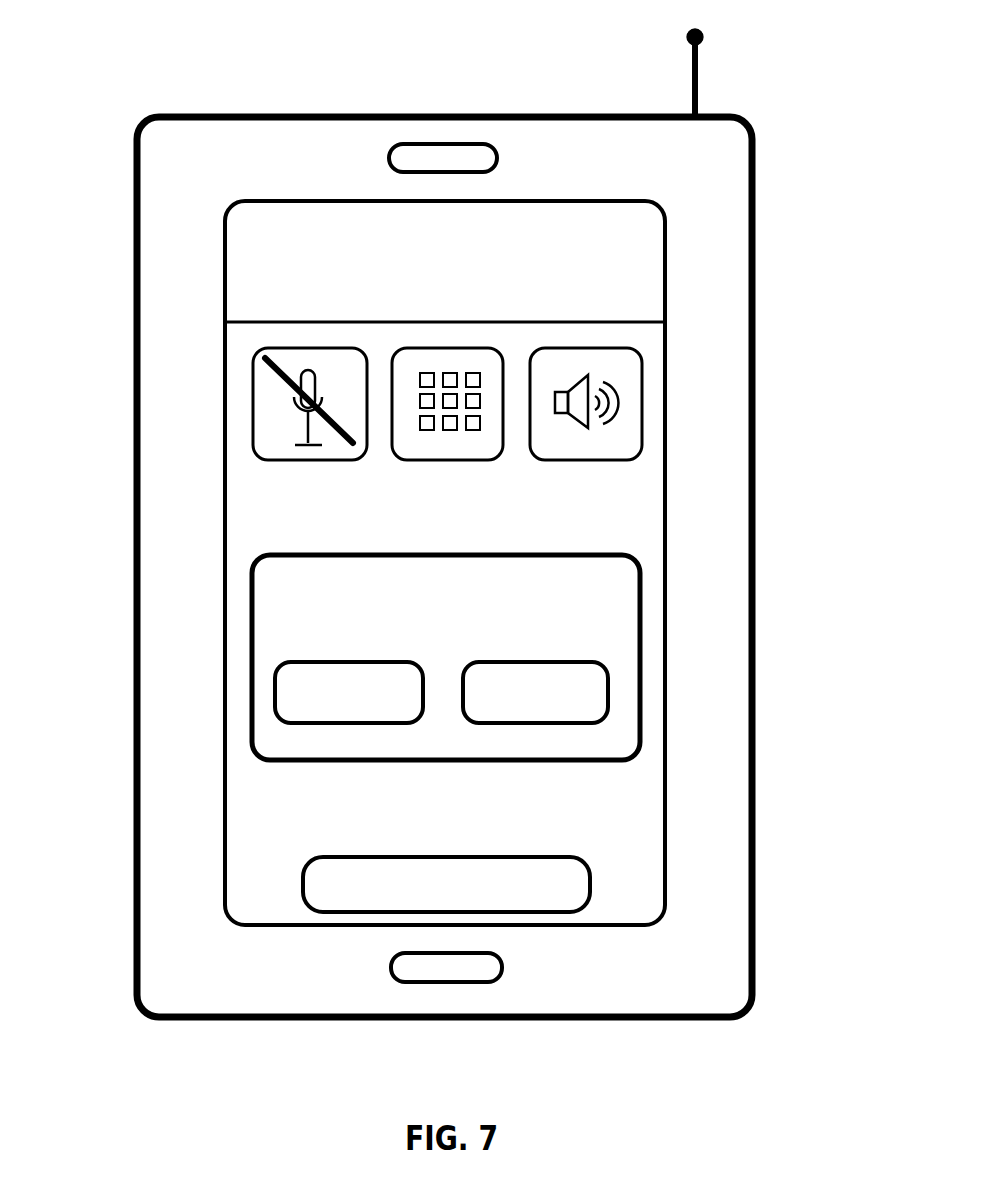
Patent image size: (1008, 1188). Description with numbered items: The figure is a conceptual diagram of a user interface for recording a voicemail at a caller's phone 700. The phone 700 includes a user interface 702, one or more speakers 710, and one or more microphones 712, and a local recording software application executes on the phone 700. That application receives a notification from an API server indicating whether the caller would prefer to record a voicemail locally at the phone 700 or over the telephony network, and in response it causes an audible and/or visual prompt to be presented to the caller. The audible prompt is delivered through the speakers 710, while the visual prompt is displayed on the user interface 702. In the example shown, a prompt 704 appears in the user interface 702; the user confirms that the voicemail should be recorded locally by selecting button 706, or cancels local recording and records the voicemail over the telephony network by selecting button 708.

The phone 700 is at (752, 178).
The user interface 702 is at (665, 263).
The prompt 704 is at (640, 582).
The button 706 is at (275, 693).
The button 708 is at (608, 690).
The speakers 710 is at (497, 158).
The microphones 712 is at (502, 967).